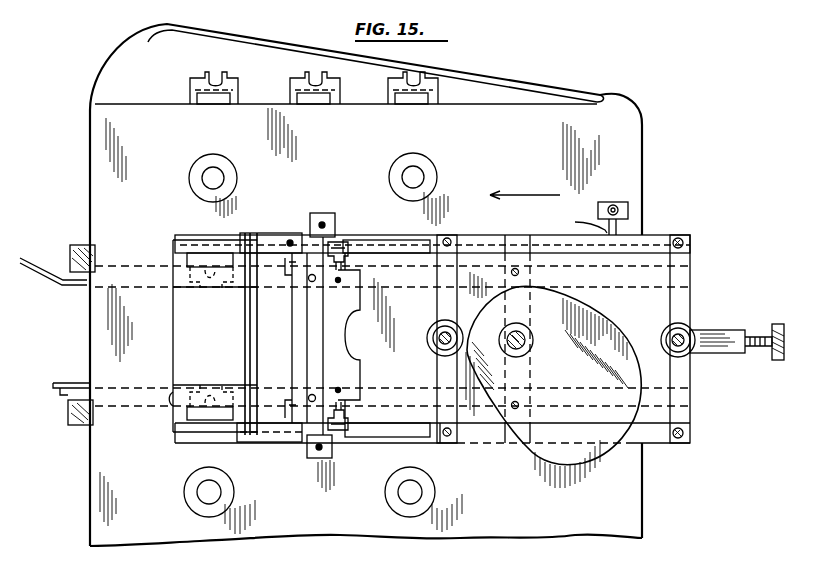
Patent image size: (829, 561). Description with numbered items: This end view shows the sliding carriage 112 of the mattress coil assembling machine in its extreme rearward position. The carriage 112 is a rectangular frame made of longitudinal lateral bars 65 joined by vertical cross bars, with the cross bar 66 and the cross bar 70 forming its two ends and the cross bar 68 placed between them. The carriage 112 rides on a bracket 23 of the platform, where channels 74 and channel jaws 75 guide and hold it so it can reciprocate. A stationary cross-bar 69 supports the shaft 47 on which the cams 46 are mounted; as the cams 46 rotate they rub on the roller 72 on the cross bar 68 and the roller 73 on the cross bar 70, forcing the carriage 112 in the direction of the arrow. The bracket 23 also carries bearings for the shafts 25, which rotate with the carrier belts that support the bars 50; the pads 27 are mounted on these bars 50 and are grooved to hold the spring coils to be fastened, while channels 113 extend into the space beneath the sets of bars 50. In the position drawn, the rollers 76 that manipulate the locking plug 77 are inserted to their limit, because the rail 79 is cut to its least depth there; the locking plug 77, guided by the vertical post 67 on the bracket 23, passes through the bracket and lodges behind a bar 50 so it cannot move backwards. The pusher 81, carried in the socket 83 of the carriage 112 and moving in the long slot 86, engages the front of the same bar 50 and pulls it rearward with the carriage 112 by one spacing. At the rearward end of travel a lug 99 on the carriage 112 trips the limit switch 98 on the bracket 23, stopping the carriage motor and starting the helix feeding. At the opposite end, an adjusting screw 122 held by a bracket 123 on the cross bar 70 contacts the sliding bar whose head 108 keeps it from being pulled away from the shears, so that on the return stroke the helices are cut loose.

The brackets 23 is at (632, 166).
The shafts 25 is at (218, 178).
The pads 27 is at (200, 80).
The cams 46 is at (571, 367).
The shaft 47 is at (522, 342).
The bars 50 is at (232, 97).
The lateral bars 65 is at (656, 235).
The cross bar 66 is at (250, 358).
The vertical post 67 is at (340, 350).
The cross bar 68 is at (462, 443).
The stationary cross-bar 69 is at (462, 440).
The cross bar 70 is at (682, 396).
The roller 72 is at (436, 332).
The roller 73 is at (680, 330).
The channels 74 is at (312, 214).
The channel jaws 75 is at (326, 224).
The rollers 76 is at (346, 244).
The locking plug 77 is at (344, 283).
The rail 79 is at (385, 246).
The pusher 81 is at (292, 287).
The socket 83 is at (287, 240).
The long slot 86 is at (170, 424).
The limit switch 98 is at (606, 203).
The lug 99 is at (577, 222).
The head 108 is at (292, 340).
The carriage 112 is at (495, 226).
The channels 113 is at (72, 258).
The adjusting screw 122 is at (768, 325).
The bracket 123 is at (714, 354).